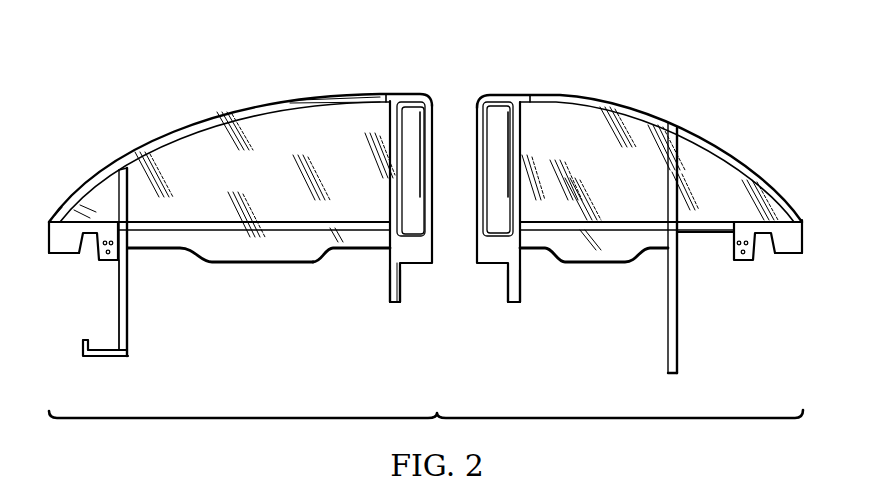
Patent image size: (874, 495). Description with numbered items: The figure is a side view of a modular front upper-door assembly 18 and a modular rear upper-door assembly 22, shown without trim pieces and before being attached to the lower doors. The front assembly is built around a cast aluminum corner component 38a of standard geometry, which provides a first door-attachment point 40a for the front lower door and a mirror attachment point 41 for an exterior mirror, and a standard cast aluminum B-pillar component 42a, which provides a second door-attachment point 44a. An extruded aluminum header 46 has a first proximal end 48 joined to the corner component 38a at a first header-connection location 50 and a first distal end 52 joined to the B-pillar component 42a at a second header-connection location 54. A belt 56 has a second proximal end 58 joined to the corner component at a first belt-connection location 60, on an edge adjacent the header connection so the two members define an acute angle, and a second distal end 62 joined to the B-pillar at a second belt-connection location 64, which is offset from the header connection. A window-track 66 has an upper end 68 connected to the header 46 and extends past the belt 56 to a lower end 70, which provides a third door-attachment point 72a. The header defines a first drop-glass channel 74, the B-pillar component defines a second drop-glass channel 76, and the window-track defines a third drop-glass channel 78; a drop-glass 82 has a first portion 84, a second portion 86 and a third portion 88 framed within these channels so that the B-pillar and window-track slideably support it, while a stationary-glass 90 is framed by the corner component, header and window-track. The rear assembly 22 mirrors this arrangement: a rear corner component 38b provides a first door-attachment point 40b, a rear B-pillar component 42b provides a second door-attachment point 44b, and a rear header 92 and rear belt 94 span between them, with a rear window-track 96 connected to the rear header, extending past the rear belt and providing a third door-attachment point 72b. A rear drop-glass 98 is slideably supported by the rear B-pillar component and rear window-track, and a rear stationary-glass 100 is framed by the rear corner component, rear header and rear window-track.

The modular front upper-door assembly 18 is at (179, 73).
The modular rear upper-door assembly 22 is at (726, 97).
The header 46 is at (237, 99).
The first drop-glass channel 74 is at (297, 112).
The first distal end 52 is at (372, 96).
The second header-connection location 54 is at (389, 96).
The second drop-glass channel 76 is at (385, 137).
The B-pillar component 42a is at (411, 118).
The rear B-pillar component 42b is at (498, 110).
The first portion 84 is at (312, 104).
The second portion 86 is at (390, 167).
The second belt-connection location 64 is at (392, 226).
The drop-glass 82 is at (287, 180).
The first belt-connection location 60 is at (118, 222).
The upper end 68 is at (128, 170).
The third portion 88 is at (129, 190).
The third drop-glass channel 78 is at (129, 212).
The second proximal end 58 is at (124, 228).
The window-track 66 is at (122, 307).
The lower end 70 is at (125, 343).
The third door-attachment point 72a is at (82, 345).
The third door-attachment point 72b is at (673, 376).
The belt 56 is at (304, 228).
The second distal end 62 is at (380, 228).
The corner component 38a is at (49, 234).
The rear corner component 38b is at (794, 233).
The first door-attachment point 40a is at (66, 253).
The first door-attachment point 40b is at (787, 249).
The mirror attachment point 41 is at (108, 262).
The first header-connection location 50 is at (47, 226).
The first proximal end 48 is at (62, 204).
The stationary-glass 90 is at (94, 200).
The second door-attachment point 44a is at (398, 296).
The second door-attachment point 44b is at (515, 297).
The rear header 92 is at (611, 101).
The rear drop-glass 98 is at (586, 174).
The rear stationary-glass 100 is at (735, 192).
The rear belt 94 is at (693, 226).
The rear window-track 96 is at (670, 310).